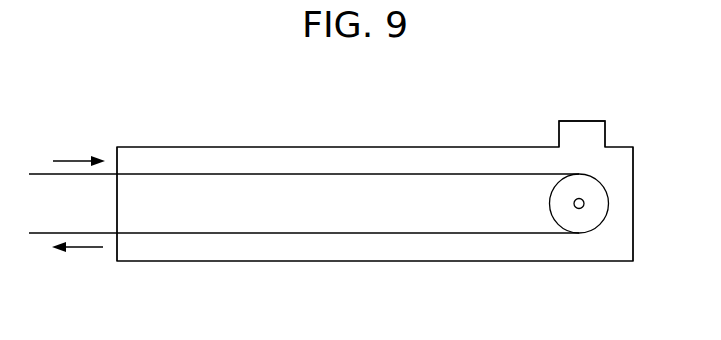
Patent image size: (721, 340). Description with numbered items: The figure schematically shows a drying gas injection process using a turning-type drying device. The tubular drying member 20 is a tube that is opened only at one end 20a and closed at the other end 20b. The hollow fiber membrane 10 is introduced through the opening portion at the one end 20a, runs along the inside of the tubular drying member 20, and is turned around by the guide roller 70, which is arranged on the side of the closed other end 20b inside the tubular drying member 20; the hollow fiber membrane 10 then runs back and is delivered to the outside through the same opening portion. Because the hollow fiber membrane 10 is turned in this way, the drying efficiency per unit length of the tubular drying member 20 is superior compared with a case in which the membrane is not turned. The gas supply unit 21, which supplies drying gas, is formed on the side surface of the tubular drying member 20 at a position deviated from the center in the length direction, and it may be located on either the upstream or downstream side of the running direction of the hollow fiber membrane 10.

The hollow fiber membrane 10 is at (45, 173).
The tubular drying member 20 is at (251, 142).
The one end 20a is at (117, 250).
The other end 20b is at (634, 165).
The gas supply unit 21 is at (588, 121).
The guide roller 70 is at (583, 226).